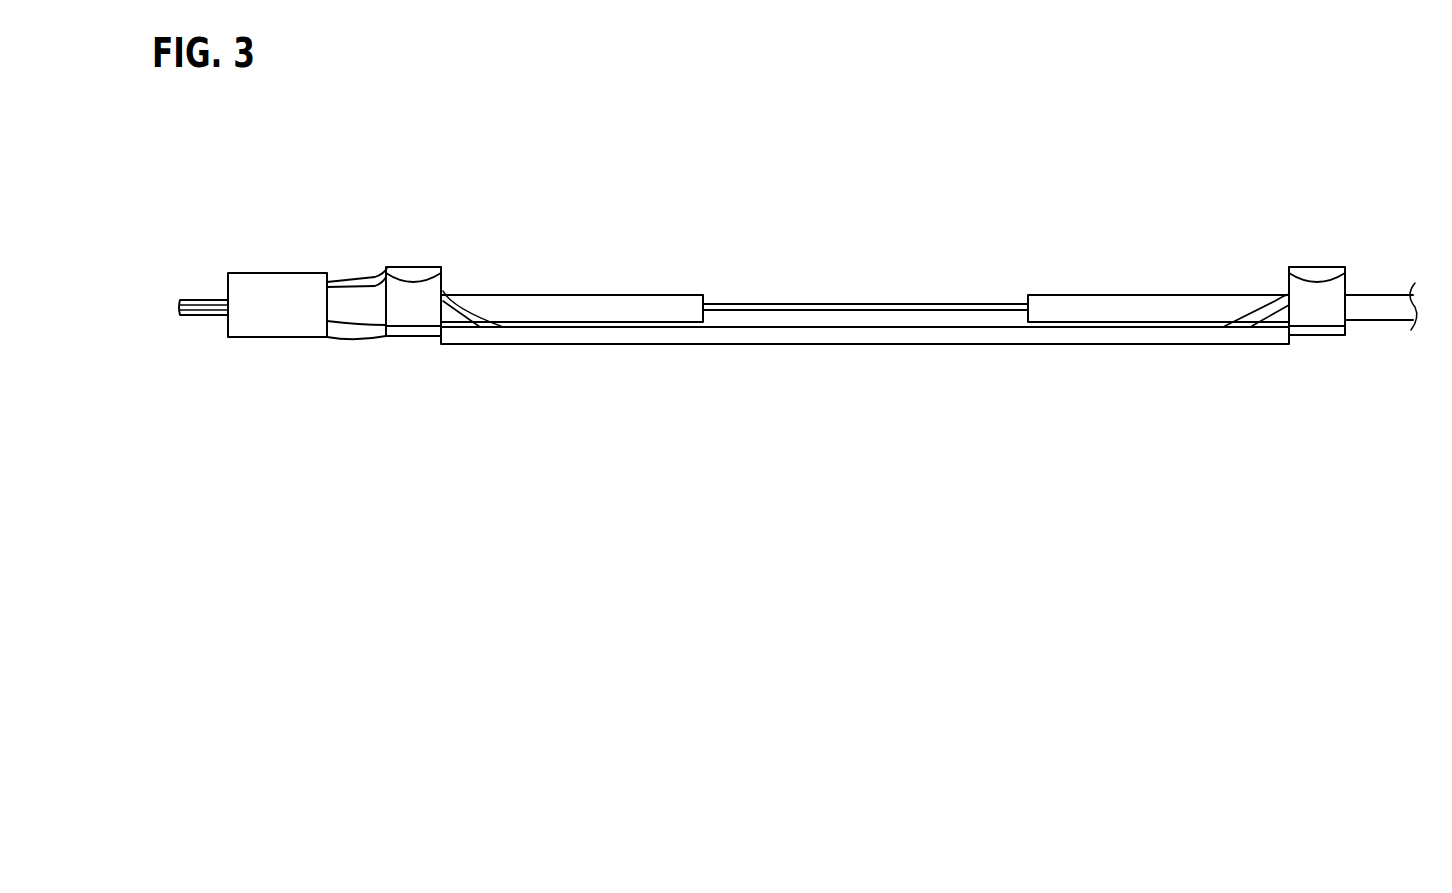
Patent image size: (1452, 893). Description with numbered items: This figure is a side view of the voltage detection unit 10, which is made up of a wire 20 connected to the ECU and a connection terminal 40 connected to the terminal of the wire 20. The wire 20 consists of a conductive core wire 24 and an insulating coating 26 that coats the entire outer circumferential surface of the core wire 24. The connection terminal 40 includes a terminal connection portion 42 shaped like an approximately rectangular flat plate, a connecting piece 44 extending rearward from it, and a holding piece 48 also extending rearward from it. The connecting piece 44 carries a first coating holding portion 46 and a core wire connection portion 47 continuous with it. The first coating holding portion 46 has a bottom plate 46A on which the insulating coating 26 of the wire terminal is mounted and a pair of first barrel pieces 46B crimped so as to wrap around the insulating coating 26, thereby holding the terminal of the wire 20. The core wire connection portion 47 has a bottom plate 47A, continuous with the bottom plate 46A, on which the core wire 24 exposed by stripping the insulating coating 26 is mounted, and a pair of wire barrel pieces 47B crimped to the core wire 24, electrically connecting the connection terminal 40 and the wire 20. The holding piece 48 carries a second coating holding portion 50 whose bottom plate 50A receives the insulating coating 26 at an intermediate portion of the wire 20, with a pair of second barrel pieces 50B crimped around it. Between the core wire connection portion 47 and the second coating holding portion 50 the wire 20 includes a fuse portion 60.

The voltage detection unit 10 is at (920, 127).
The wire 20 is at (1378, 312).
The core wire 24 is at (196, 308).
The insulating coating 26 is at (585, 305).
The connection terminal 40 is at (1108, 353).
The terminal connection portion 42 is at (845, 333).
The connecting piece 44 is at (345, 232).
The first coating holding portion 46 is at (480, 393).
The bottom plate 46A is at (425, 332).
The first barrel pieces 46B is at (415, 270).
The core wire connection portion 47 is at (330, 393).
The bottom plate 47A is at (258, 325).
The wire barrel pieces 47B is at (295, 292).
The holding piece 48 is at (1312, 240).
The second coating holding portion 50 is at (1330, 406).
The bottom plate 50A is at (1330, 332).
The second barrel pieces 50B is at (1310, 270).
The fuse portion 60 is at (852, 307).